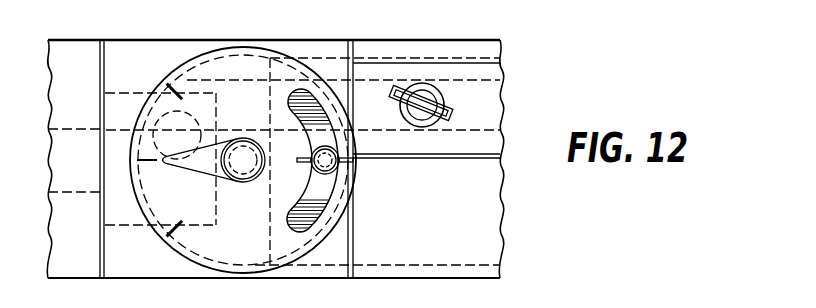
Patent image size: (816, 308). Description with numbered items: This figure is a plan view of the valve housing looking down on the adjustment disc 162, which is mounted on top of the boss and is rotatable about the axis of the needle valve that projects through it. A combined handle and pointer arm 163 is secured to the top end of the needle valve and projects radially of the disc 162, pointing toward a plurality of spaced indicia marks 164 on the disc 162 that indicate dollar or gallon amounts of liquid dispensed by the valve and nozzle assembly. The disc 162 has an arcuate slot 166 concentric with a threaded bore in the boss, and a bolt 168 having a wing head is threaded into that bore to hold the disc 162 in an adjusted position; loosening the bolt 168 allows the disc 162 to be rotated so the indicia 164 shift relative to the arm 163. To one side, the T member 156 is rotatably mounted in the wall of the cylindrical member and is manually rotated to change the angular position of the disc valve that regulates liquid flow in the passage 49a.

The passage 49a is at (486, 102).
The T member 156 is at (448, 118).
The disc 162 is at (248, 67).
The combined handle and pointer arm 163 is at (202, 166).
The indicia marks 164 is at (181, 88).
The arcuate slot 166 is at (301, 91).
The bolt 168 is at (338, 167).